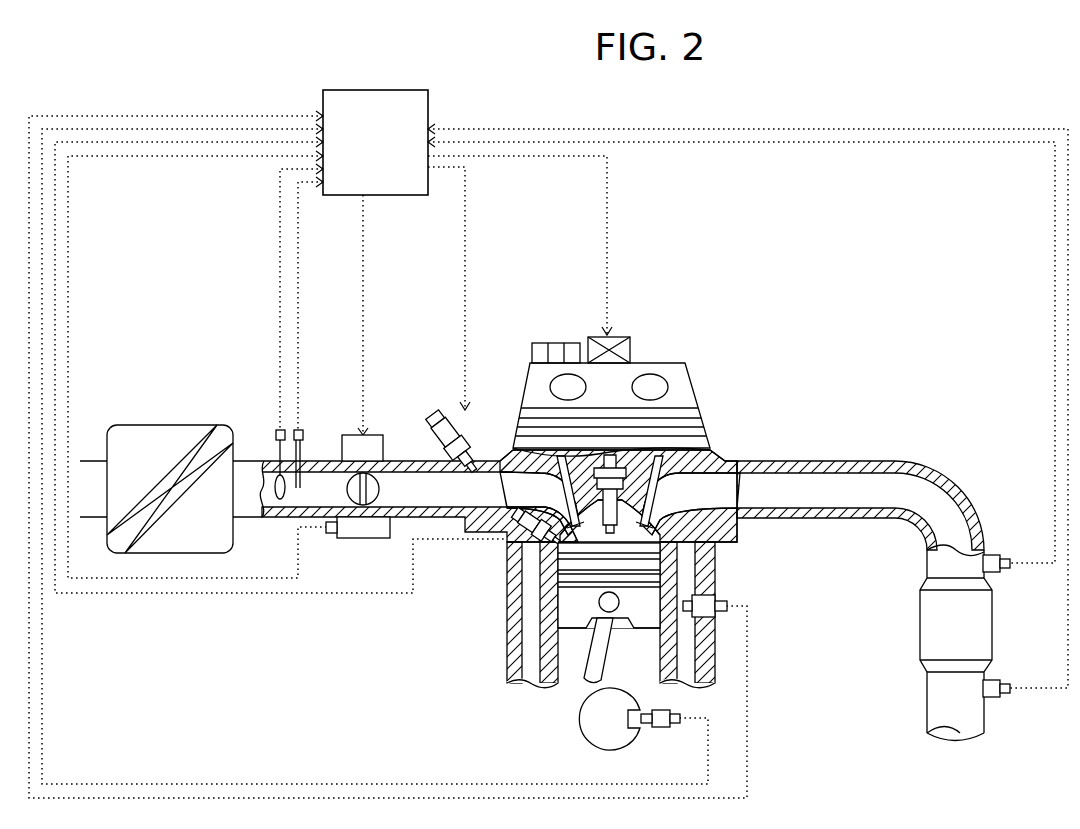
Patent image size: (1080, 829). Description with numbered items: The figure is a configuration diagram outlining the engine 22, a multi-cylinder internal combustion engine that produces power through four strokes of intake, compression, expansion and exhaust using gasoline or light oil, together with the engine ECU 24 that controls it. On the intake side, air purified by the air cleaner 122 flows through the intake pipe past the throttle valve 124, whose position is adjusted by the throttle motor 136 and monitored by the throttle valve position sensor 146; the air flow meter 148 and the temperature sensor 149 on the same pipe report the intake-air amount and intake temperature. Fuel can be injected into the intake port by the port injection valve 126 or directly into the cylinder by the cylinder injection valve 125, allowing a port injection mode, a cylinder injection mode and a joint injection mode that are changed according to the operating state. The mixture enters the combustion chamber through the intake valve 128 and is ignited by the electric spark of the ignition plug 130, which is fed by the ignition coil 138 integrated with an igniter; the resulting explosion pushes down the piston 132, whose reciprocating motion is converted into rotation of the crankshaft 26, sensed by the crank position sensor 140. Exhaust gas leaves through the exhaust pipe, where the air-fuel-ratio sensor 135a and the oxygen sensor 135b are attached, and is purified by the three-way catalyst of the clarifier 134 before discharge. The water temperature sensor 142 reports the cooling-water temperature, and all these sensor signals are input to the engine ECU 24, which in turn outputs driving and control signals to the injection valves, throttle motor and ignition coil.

The engine 22 is at (770, 323).
The engine ECU 24 is at (400, 90).
The crankshaft 26 is at (578, 718).
The air cleaner 122 is at (172, 424).
The throttle valve 124 is at (372, 480).
The cylinder injection valve 125 is at (530, 545).
The port injection valve 126 is at (432, 410).
The intake valve 128 is at (580, 523).
The ignition plug 130 is at (608, 512).
The piston 132 is at (575, 603).
The clarifier 134 is at (920, 622).
The air-fuel-ratio sensor 135a is at (992, 553).
The oxygen sensor 135b is at (992, 700).
The throttle motor 136 is at (352, 432).
The ignition coil 138 is at (628, 347).
The crank position sensor 140 is at (660, 728).
The water temperature sensor 142 is at (715, 595).
The throttle valve position sensor 146 is at (362, 539).
The air flow meter 148 is at (276, 435).
The temperature sensor 149 is at (303, 435).